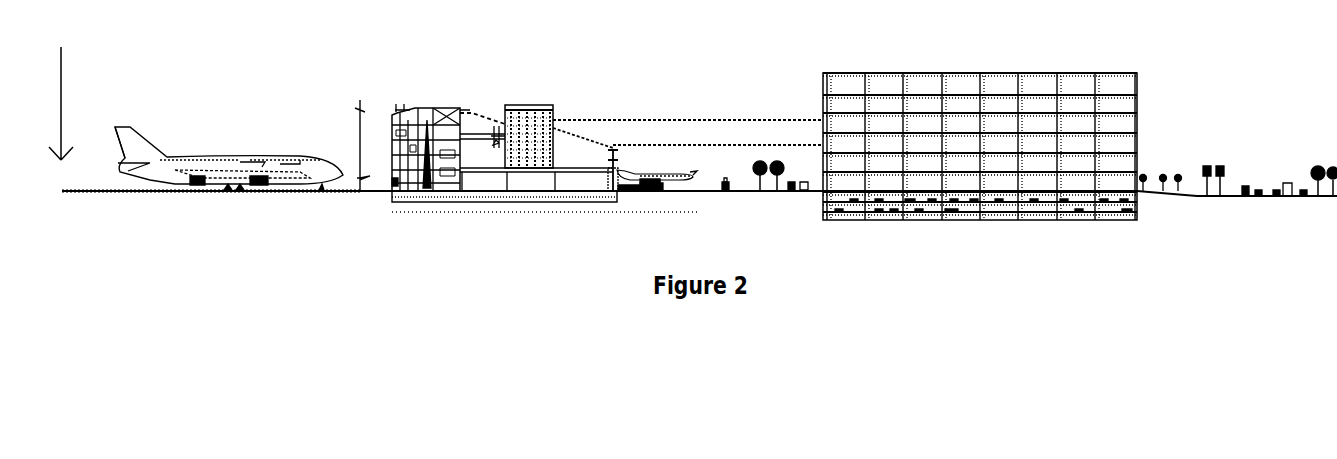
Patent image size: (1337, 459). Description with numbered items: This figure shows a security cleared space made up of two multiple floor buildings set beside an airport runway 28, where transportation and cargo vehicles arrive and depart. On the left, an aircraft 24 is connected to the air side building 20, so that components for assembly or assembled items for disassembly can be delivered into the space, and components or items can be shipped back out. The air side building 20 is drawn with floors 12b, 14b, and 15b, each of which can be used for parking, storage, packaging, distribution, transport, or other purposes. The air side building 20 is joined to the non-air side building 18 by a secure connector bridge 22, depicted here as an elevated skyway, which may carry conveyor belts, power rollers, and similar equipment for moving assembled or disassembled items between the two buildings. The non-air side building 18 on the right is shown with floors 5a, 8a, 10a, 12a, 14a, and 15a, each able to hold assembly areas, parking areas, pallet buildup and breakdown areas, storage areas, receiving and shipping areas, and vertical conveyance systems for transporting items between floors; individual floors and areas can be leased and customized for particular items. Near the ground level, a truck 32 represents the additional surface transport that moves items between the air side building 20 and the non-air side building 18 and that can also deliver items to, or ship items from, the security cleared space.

The airport runway 28 is at (62, 93).
The aircraft 24 is at (128, 127).
The air side building 20 is at (413, 120).
The floor 12b is at (471, 117).
The secure connector bridge 22 is at (696, 120).
The non-air side building 18 is at (921, 73).
The floor 5a is at (823, 83).
The floor 8a is at (823, 99).
The floor 10a is at (823, 130).
The floor 12a is at (823, 143).
The floor 14a is at (823, 167).
The floor 15a is at (823, 192).
The floor 14b is at (615, 154).
The floor 15b is at (589, 192).
The truck 32 is at (628, 191).